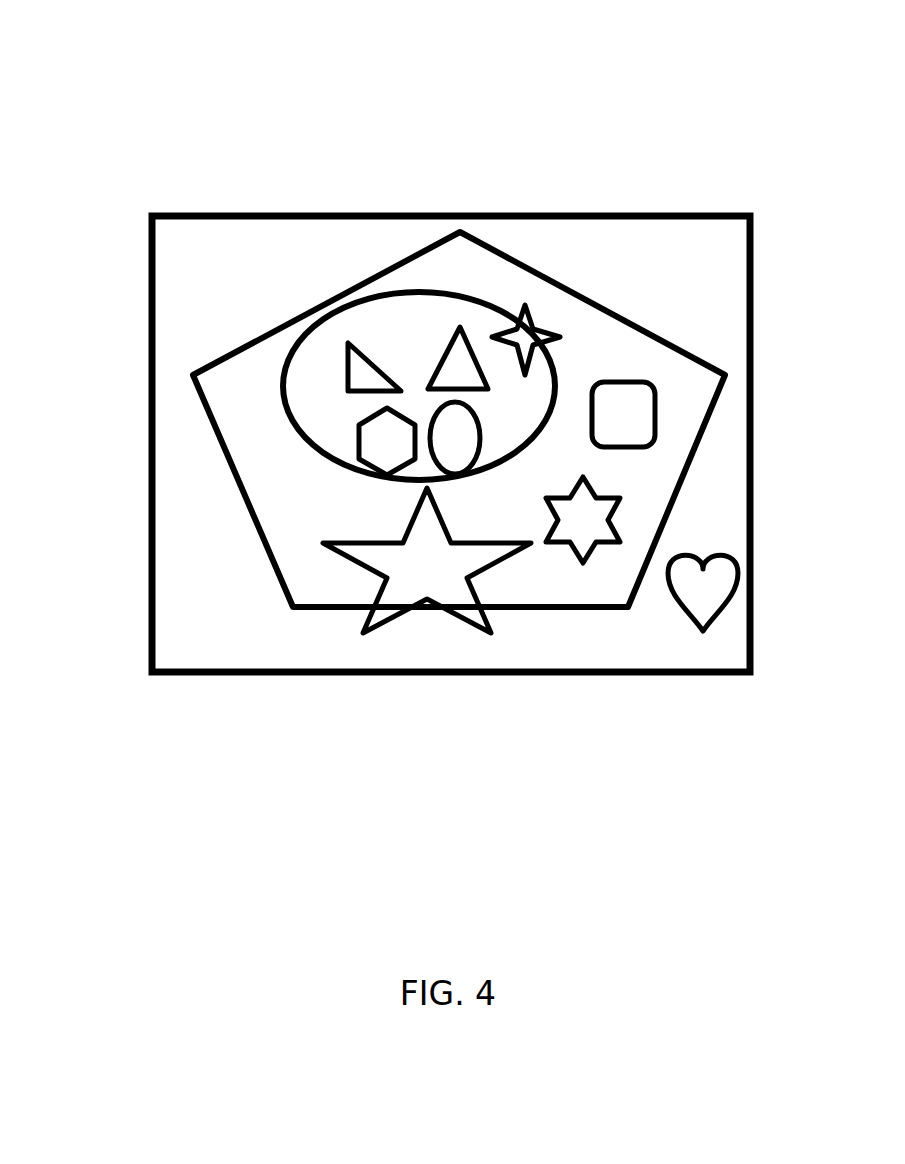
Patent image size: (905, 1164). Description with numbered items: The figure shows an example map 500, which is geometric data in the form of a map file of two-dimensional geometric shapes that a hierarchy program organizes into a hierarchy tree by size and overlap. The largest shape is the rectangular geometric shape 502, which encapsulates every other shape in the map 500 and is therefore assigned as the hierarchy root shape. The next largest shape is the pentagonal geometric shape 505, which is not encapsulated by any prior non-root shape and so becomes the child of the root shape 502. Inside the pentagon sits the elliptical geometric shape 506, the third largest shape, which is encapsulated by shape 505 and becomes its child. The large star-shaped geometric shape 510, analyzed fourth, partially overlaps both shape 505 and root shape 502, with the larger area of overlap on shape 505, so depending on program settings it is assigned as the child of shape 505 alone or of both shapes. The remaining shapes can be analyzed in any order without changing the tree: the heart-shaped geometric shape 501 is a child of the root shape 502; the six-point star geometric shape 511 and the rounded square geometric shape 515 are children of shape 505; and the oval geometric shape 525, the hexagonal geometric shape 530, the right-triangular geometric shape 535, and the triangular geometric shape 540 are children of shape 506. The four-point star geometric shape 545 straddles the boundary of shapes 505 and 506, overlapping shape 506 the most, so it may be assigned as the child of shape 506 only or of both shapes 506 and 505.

The map 500 is at (698, 151).
The geometric shape 501 is at (683, 601).
The geometric shape 502 is at (647, 270).
The geometric shape 505 is at (575, 356).
The geometric shape 506 is at (308, 424).
The geometric shape 510 is at (407, 567).
The geometric shape 511 is at (563, 531).
The geometric shape 515 is at (602, 426).
The geometric shape 525 is at (435, 449).
The geometric shape 530 is at (367, 452).
The geometric shape 535 is at (340, 375).
The geometric shape 540 is at (433, 350).
The geometric shape 545 is at (525, 292).